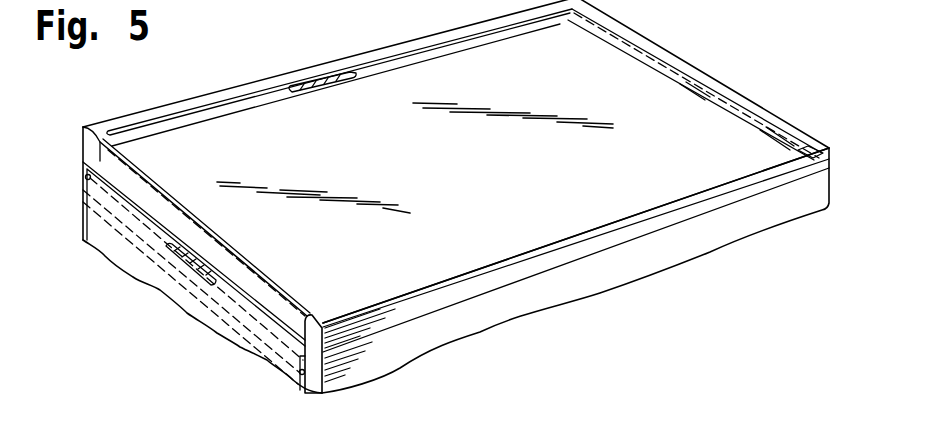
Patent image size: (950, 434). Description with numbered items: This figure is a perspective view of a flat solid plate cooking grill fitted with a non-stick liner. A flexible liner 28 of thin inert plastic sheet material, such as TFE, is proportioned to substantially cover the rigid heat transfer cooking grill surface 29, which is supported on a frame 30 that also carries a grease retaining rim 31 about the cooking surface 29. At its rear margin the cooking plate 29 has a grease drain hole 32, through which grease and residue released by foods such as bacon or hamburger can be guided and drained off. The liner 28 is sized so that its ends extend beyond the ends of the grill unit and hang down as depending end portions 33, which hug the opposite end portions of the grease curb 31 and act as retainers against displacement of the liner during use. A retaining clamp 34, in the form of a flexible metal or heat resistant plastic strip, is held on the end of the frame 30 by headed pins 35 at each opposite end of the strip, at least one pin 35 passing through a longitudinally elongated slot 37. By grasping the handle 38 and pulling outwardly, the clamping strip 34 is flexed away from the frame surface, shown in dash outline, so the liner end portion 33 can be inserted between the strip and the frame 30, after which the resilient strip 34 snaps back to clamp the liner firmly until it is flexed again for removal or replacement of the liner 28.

The flexible liner 28 is at (697, 120).
The heat transfer cooking grill surface 29 is at (236, 107).
The frame 30 is at (465, 322).
The grease retaining rim 31 is at (547, 252).
The grease drain hole 32 is at (340, 78).
The depending end portions of the liner 33 is at (799, 134).
The retaining clamp 34 is at (248, 307).
The headed pins 35 is at (85, 180).
The longitudinally elongated slot 37 is at (326, 362).
The handle 38 is at (187, 263).